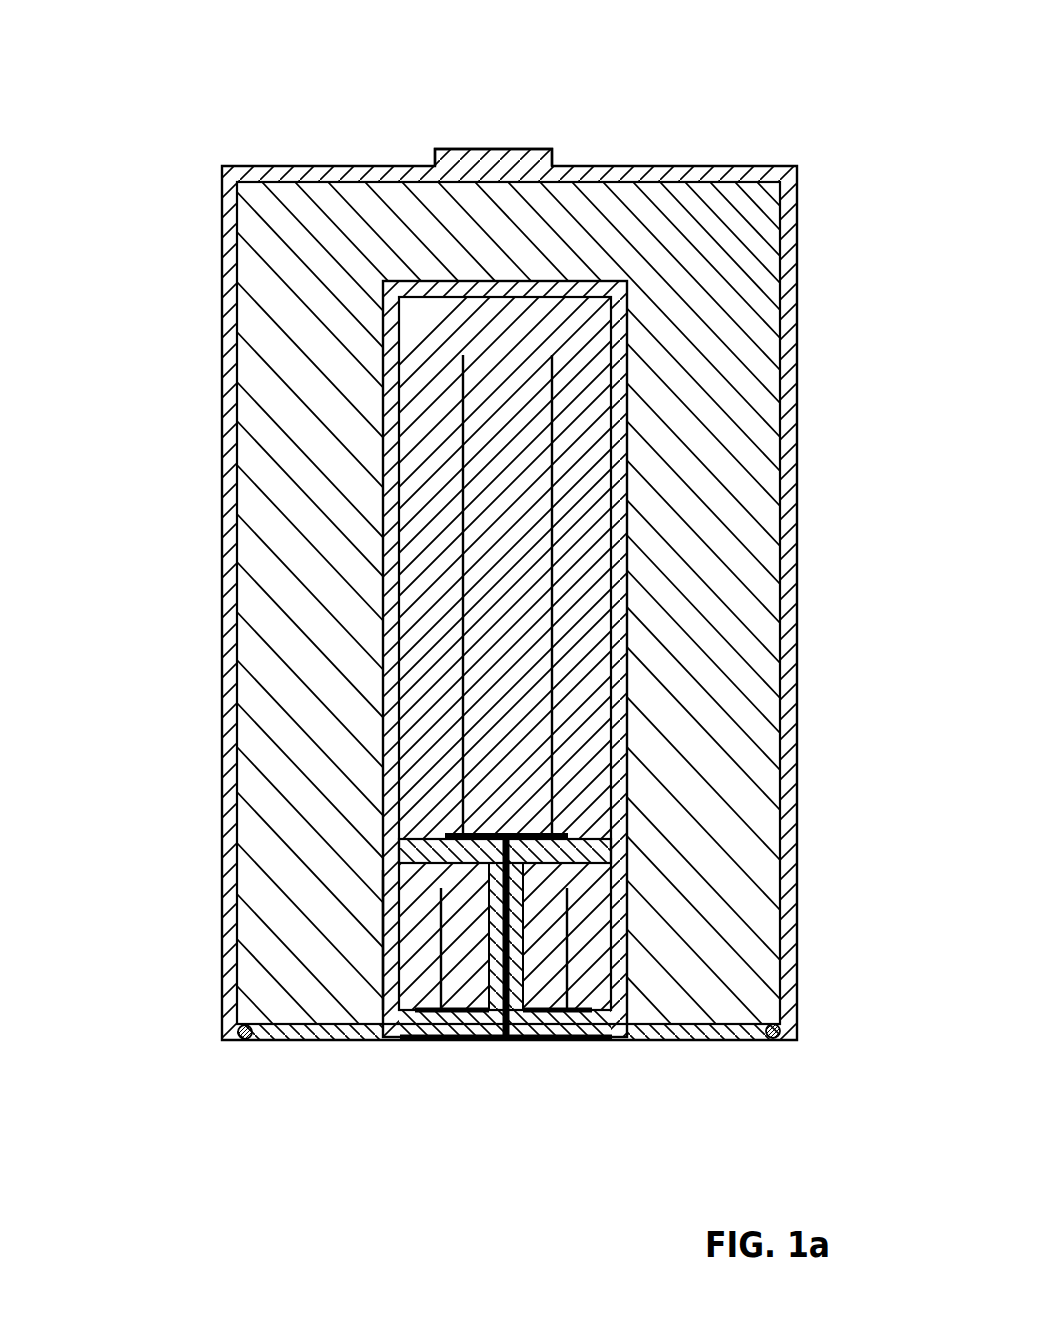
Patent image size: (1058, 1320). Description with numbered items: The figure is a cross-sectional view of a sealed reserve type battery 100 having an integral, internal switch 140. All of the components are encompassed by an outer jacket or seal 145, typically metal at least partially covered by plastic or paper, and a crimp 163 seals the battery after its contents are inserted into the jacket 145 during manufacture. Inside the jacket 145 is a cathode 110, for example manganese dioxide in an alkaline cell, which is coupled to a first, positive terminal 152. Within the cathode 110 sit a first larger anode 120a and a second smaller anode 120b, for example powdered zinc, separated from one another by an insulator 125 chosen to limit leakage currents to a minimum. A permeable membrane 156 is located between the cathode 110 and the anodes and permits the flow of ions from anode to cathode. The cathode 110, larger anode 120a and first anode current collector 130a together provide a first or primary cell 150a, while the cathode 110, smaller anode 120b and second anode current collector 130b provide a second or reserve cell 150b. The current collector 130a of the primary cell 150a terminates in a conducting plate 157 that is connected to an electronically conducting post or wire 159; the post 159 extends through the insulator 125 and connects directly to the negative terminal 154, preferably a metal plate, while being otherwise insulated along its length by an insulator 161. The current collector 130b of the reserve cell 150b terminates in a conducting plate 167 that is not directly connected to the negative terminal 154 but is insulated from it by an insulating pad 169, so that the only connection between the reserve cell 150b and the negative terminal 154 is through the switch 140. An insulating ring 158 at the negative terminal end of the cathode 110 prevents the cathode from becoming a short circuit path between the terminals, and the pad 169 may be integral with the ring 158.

The electrochemical cell 100 is at (210, 155).
The primary cell 150a is at (504, 592).
The reserve cell 150b is at (504, 953).
The outer jacket 145 is at (222, 428).
The first terminal 152 is at (518, 148).
The cathode 110 is at (262, 518).
The permeable membrane 156 is at (383, 373).
The first larger anode 120a is at (595, 567).
The first anode current collector 130a is at (555, 505).
The conducting plate 157 is at (548, 830).
The conducting post 159 is at (527, 872).
The insulator 161 is at (522, 897).
The second terminal 154 is at (492, 1042).
The second anode current collector 130b is at (570, 890).
The second smaller anode 120b is at (585, 957).
The insulating pad 169 is at (410, 1042).
The conducting plate 167 is at (550, 1042).
The switch 140 is at (586, 1052).
The insulator 125 is at (385, 893).
The insulating ring 158 is at (292, 1043).
The crimp 163 is at (243, 1043).